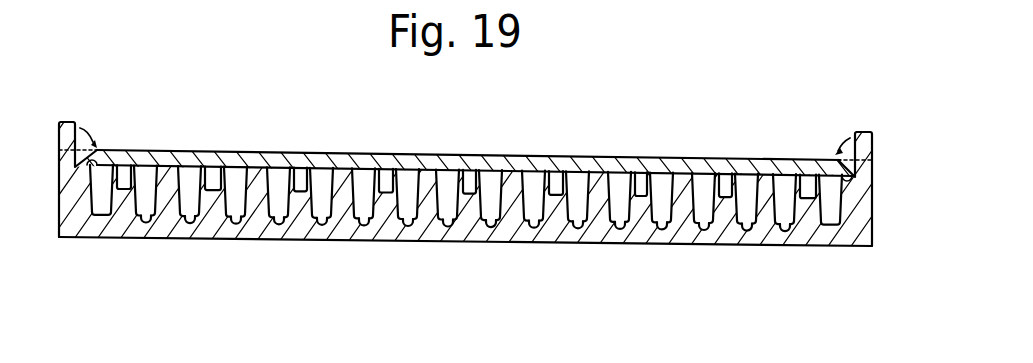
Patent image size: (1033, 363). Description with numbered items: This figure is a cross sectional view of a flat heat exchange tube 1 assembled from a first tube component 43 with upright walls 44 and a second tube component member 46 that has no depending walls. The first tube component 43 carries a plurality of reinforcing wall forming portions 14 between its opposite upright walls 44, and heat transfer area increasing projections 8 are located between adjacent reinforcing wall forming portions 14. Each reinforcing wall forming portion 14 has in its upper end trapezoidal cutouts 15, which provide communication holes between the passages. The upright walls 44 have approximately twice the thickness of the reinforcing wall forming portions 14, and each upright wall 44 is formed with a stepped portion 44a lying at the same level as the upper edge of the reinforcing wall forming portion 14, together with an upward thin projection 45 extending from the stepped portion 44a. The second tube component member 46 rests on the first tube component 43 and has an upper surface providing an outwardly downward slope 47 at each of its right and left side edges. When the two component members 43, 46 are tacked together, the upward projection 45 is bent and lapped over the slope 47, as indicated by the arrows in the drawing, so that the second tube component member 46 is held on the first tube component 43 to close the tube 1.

The heat exchange plate 1 is at (627, 157).
The heat transfer area increasing projection 8 is at (236, 225).
The reinforcing wall forming portion 14 is at (228, 210).
The trapezoidal cutout 15 is at (213, 176).
The first tube component 43 is at (620, 246).
The upright wall 44 is at (58, 190).
The stepped portion 44a is at (98, 168).
The upward thin projection 45 is at (65, 121).
The second tube component member 46 is at (544, 157).
The outwardly downward slope 47 is at (97, 150).